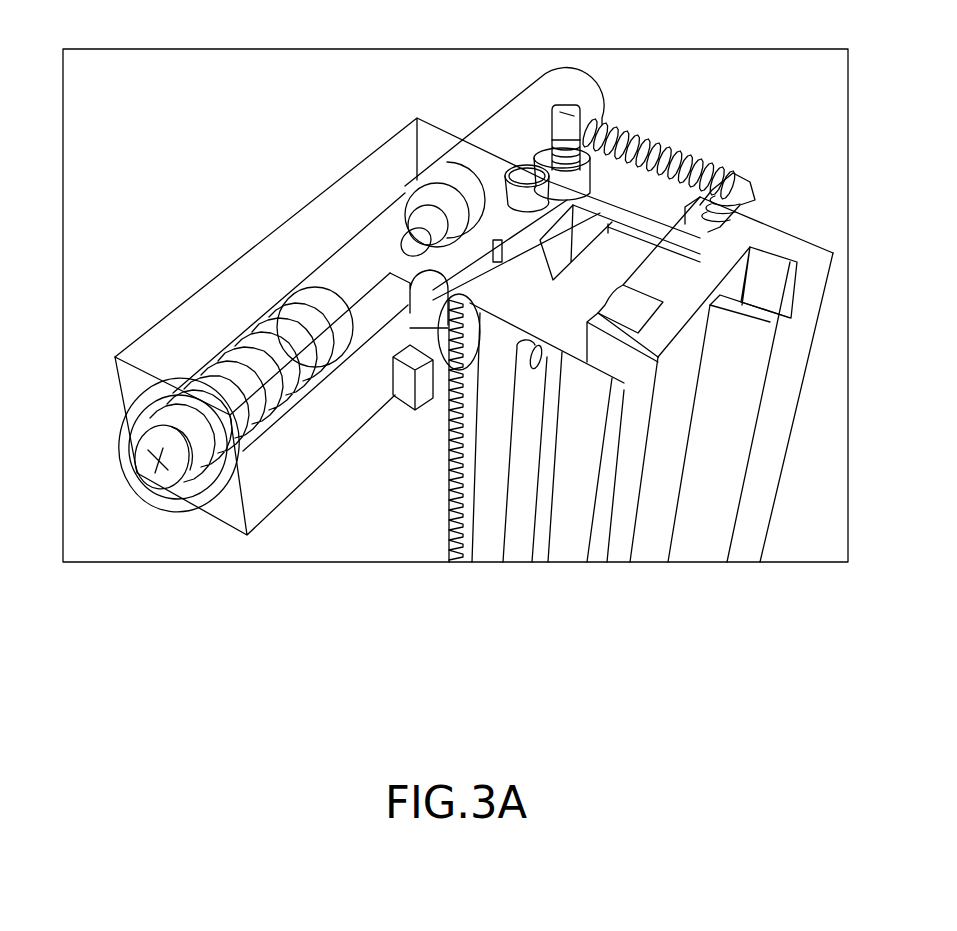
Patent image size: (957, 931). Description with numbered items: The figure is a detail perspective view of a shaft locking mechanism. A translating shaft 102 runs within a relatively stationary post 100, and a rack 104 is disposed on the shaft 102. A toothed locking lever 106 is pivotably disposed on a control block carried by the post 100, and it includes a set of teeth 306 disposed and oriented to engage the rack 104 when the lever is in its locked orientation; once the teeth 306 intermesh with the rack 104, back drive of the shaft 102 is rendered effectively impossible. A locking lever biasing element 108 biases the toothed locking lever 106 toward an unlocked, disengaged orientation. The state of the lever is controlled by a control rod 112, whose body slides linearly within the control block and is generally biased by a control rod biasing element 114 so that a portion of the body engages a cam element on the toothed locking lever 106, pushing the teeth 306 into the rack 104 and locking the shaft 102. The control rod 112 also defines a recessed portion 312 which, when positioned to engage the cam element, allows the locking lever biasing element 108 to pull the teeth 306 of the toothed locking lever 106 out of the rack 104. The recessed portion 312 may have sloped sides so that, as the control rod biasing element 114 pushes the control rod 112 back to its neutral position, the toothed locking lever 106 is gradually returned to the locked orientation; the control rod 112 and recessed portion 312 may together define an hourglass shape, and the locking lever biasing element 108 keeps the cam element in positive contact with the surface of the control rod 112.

The post 100 is at (800, 340).
The translating shaft 102 is at (740, 248).
The rack 104 is at (450, 517).
The toothed locking lever 106 is at (482, 262).
The locking lever biasing element 108 is at (669, 143).
The control rod 112 is at (568, 80).
The control rod biasing element 114 is at (228, 352).
The teeth 306 is at (428, 370).
The recessed portion 312 is at (378, 212).